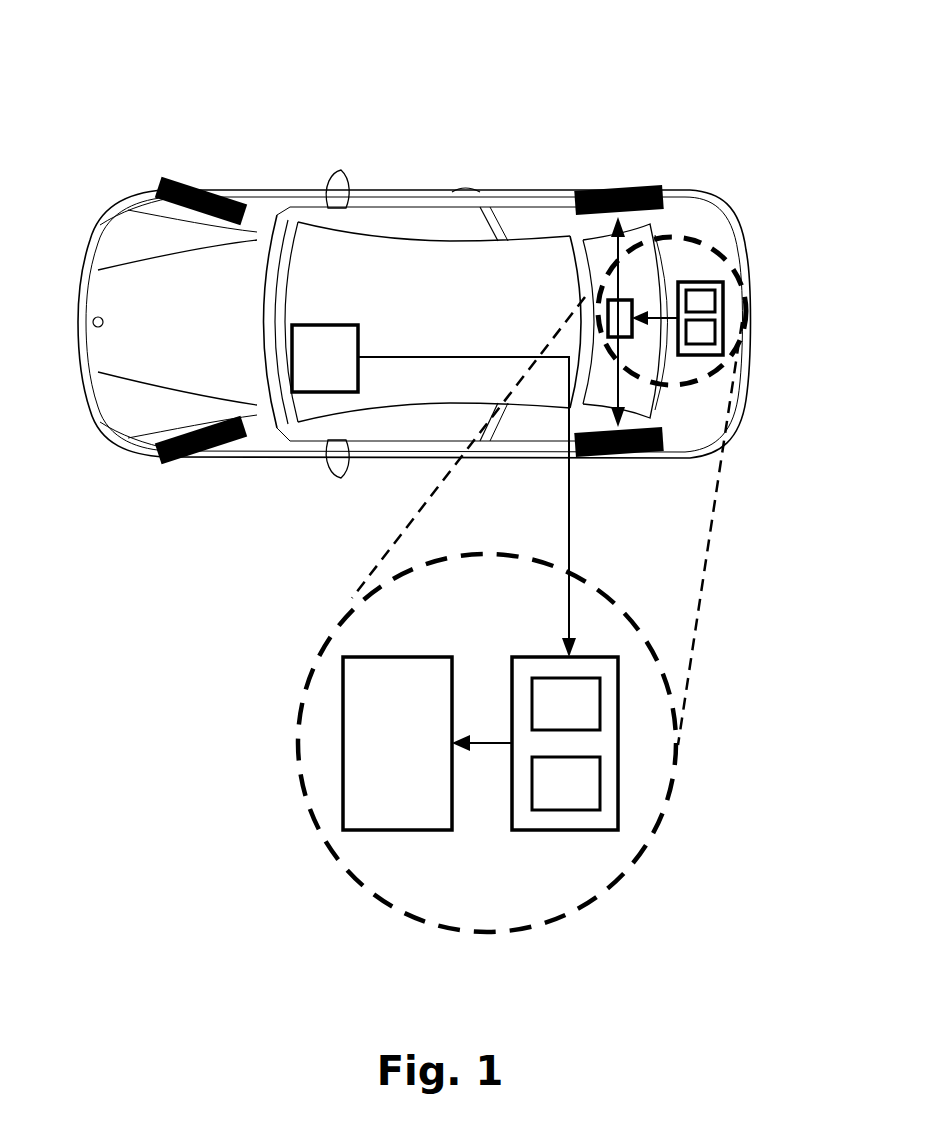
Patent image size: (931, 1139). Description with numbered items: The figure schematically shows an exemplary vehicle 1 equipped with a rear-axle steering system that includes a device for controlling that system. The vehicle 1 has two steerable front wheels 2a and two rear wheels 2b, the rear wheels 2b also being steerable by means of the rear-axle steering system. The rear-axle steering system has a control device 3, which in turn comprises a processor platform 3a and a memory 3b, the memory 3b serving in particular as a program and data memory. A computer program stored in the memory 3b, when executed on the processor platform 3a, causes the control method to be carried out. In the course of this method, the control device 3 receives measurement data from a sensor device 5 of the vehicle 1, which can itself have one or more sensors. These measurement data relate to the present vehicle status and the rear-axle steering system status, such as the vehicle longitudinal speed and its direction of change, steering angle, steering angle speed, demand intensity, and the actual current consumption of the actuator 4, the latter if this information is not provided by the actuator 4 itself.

The vehicle 1 is at (740, 120).
The front wheels 2a is at (202, 187).
The rear wheels 2b is at (623, 185).
The control device 3 is at (547, 780).
The processor platform 3a is at (566, 704).
The memory 3b is at (566, 783).
The actuator 4 is at (397, 743).
The sensor device 5 is at (325, 358).